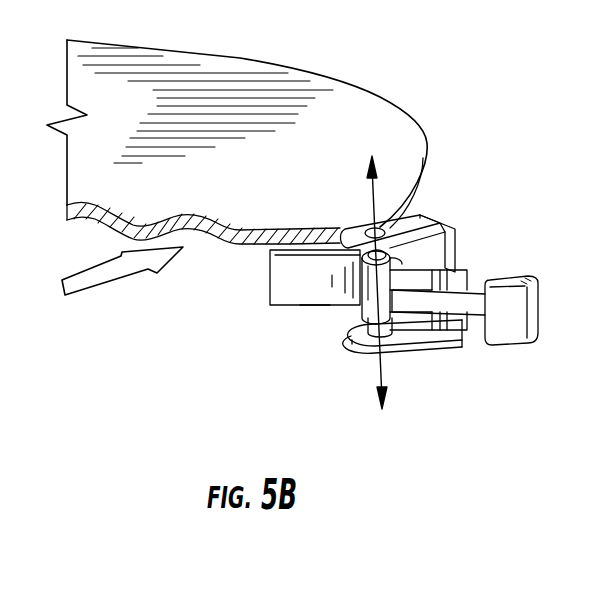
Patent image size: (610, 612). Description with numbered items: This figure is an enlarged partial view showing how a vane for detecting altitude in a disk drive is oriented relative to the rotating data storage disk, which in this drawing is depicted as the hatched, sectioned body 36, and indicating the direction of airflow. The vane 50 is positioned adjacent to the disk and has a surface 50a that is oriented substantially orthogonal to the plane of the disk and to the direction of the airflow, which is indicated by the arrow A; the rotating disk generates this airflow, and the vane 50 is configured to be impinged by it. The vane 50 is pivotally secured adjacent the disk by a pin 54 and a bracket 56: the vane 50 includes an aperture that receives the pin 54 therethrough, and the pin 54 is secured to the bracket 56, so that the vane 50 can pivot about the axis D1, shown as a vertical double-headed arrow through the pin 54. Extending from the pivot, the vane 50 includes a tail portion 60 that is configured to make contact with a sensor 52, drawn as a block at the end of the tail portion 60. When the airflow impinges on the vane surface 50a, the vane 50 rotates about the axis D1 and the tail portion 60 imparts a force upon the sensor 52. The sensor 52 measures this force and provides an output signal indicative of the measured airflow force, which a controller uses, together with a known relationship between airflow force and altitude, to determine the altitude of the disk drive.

The panel / support wall 36 is at (348, 113).
The vane 50 is at (287, 307).
The vane surface 50a is at (315, 308).
The sensor 52 is at (507, 330).
The pin 54 is at (352, 337).
The bracket 56 is at (443, 225).
The tail portion 60 is at (465, 270).
The arrow indicating direction of airflow A is at (122, 272).
The pivot axis D1 is at (387, 367).